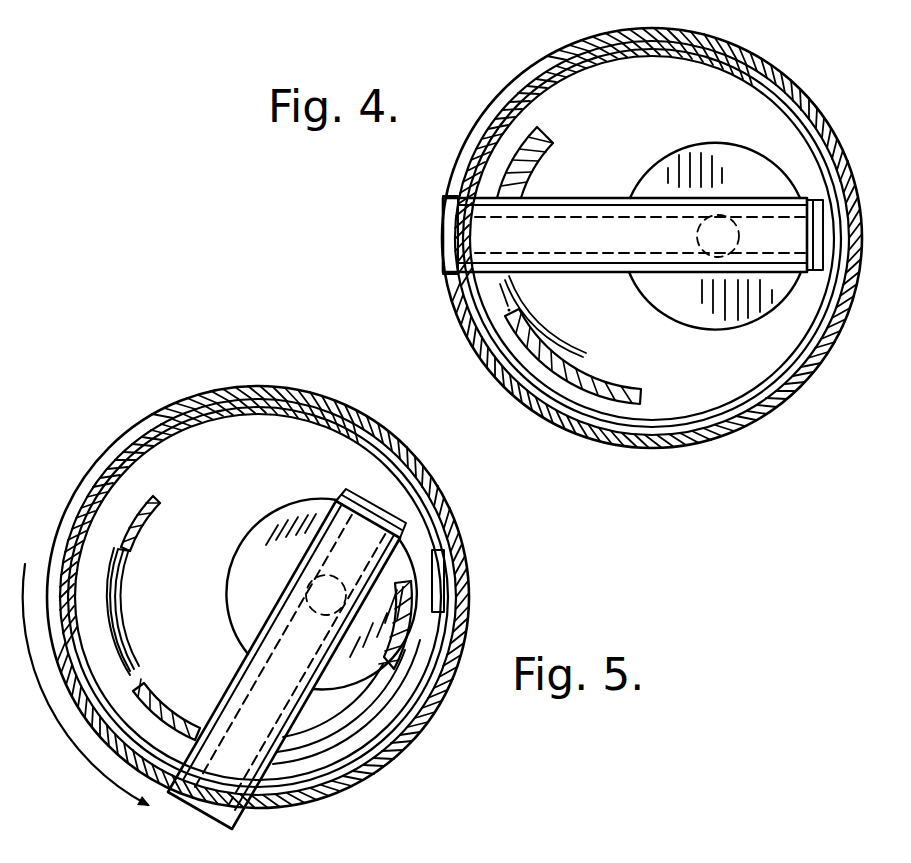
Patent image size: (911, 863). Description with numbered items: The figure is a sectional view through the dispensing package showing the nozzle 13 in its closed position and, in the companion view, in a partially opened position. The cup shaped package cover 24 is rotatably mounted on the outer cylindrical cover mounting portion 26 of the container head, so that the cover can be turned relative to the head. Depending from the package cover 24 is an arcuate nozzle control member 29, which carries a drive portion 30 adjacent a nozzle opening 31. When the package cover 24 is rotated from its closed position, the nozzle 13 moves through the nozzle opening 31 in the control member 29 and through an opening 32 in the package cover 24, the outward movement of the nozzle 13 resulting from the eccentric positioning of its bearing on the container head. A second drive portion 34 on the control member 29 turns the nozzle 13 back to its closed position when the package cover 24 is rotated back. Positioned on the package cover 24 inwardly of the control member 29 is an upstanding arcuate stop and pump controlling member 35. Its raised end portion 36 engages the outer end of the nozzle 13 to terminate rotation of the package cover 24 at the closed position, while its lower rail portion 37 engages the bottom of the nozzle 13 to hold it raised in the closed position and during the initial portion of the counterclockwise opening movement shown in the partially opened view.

In FIG. 4, the nozzle 13 is at (622, 250).
In FIG. 5, the nozzle 13 is at (284, 628).
In FIG. 4, the package cover 24 is at (575, 426).
In FIG. 4, the outer cylindrical cover mounting portion 26 is at (577, 80).
In FIG. 5, the arcuate nozzle control member 29 is at (334, 745).
In FIG. 5, the drive portion 30 is at (140, 690).
In FIG. 5, the nozzle opening 31 is at (312, 730).
In FIG. 4, the opening 32 is at (440, 268).
In FIG. 5, the second drive portion 34 is at (363, 707).
In FIG. 5, the stop and pump controlling member 35 is at (140, 596).
In FIG. 5, the raised end portion 36 is at (160, 500).
In FIG. 5, the lower rail portion 37 is at (156, 687).